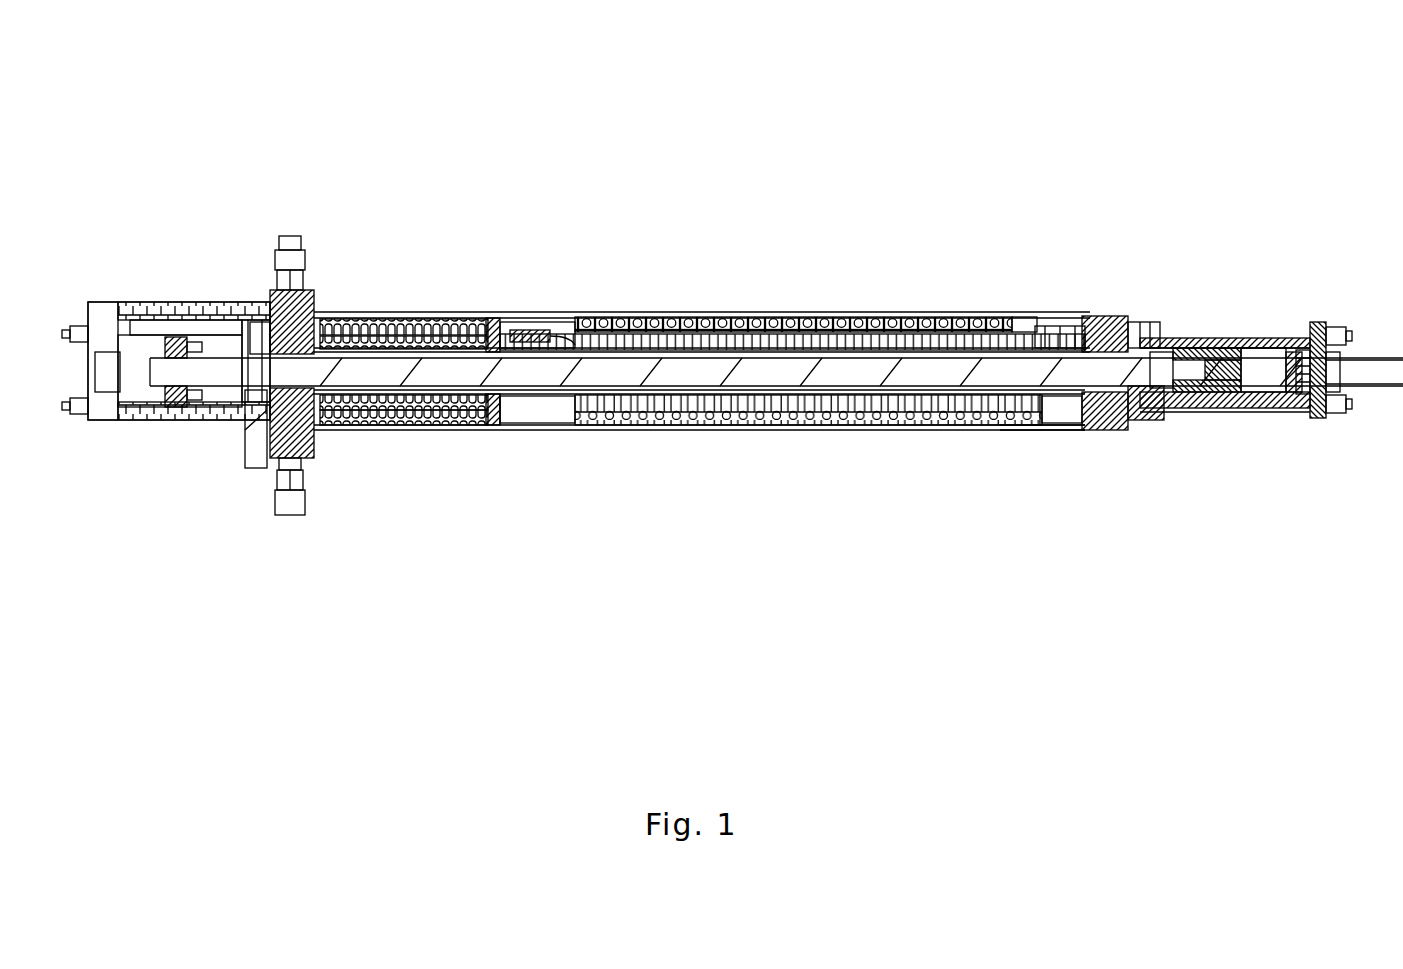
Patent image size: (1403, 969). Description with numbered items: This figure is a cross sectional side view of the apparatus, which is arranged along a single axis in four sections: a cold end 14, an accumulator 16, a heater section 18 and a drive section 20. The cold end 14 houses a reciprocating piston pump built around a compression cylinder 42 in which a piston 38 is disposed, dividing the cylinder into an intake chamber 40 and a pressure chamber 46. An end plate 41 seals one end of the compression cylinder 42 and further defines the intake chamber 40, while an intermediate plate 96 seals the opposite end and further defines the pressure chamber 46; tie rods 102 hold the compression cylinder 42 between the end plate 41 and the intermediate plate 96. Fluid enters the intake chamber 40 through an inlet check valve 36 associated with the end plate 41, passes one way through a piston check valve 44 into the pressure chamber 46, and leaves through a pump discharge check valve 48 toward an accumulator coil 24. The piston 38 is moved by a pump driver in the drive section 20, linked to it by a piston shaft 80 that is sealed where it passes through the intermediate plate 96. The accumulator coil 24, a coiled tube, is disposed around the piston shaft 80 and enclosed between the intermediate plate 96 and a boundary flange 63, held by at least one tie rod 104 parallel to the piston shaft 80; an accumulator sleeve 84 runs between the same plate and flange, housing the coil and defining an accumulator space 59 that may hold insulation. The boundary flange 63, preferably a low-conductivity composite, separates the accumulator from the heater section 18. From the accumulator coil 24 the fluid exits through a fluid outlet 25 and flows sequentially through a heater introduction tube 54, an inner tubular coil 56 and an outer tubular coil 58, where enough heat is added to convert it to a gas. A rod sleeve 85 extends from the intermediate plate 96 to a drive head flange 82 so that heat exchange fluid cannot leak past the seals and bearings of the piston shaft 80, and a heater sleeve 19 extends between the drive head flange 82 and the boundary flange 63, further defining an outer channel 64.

The cold end 14 is at (1290, 438).
The accumulator 16 is at (733, 462).
The heater section 18 is at (425, 445).
The heater sleeve 19 is at (360, 432).
The drive section 20 is at (170, 430).
The accumulator coil 24 is at (990, 430).
The fluid outlet 25 is at (517, 330).
The inlet check valve 36 is at (1278, 395).
The piston 38 is at (1237, 345).
The intake chamber 40 is at (1263, 370).
The end plate 41 is at (1316, 418).
The compression cylinder 42 is at (1200, 345).
The piston check valve 44 is at (1212, 392).
The pressure chamber 46 is at (1163, 398).
The pump discharge check valve 48 is at (1127, 320).
The heater introduction tube 54 is at (375, 312).
The inner tubular coil 56 is at (422, 328).
The outer tubular coil 58 is at (443, 325).
The accumulator space 59 is at (540, 412).
The boundary flange 63 is at (500, 425).
The outer channel 64 is at (330, 432).
The piston shaft 80 is at (782, 372).
The drive head flange 82 is at (318, 428).
The accumulator sleeve 84 is at (698, 420).
The rod sleeve 85 is at (962, 414).
The intermediate plate 96 is at (1112, 418).
The tie rods 102 is at (1248, 395).
The tie rod 104 is at (900, 312).